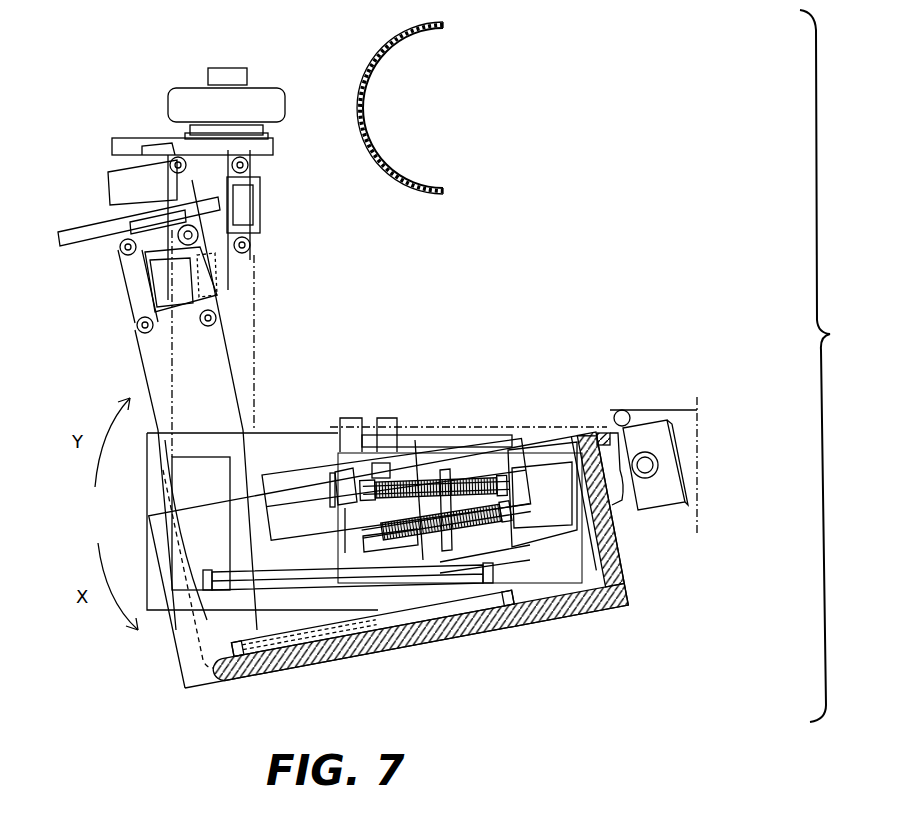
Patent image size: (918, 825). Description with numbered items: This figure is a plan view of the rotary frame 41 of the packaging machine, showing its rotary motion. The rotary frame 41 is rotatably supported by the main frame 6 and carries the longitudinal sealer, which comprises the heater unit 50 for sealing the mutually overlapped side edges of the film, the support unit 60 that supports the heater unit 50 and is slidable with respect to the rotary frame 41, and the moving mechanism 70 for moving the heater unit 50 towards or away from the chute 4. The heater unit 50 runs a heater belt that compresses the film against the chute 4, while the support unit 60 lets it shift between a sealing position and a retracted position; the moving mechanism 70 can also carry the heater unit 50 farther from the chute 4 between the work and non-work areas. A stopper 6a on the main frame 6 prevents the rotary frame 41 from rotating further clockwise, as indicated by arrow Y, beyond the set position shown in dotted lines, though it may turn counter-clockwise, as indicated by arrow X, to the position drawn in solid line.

The chute 4 is at (397, 47).
The main frame 6 is at (690, 443).
The stopper 6a is at (622, 410).
The rotary frame 41 is at (463, 625).
The heater unit 50 is at (90, 185).
The support unit 60 is at (255, 335).
The moving mechanism 70 is at (456, 436).